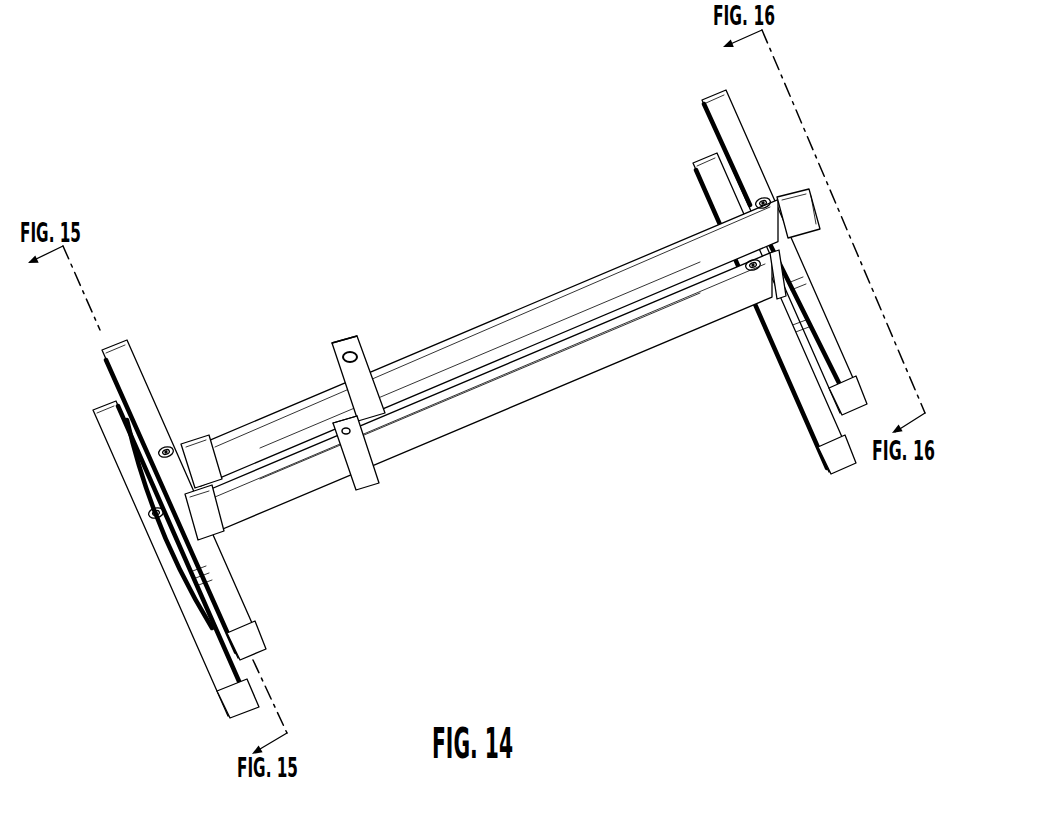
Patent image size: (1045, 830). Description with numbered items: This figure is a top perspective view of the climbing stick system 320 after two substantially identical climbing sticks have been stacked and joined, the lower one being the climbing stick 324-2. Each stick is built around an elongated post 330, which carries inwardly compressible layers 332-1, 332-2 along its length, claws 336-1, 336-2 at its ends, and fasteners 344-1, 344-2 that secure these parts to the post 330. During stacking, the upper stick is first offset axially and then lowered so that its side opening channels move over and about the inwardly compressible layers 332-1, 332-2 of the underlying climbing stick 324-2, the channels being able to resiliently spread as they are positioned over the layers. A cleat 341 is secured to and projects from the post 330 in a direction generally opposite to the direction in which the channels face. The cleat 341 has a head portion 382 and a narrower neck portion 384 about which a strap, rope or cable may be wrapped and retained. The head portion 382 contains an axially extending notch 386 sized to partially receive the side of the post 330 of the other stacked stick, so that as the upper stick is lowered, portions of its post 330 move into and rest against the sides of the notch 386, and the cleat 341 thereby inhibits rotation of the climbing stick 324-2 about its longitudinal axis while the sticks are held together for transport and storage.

The climbing stick system 320 is at (88, 203).
The climbing stick 324-2 is at (90, 420).
The post 330 is at (548, 304).
The inwardly compressible layer 332-1 is at (200, 450).
The inwardly compressible layer 332-2 is at (790, 195).
The claw 336-1 is at (247, 625).
The claw 336-2 is at (833, 440).
The cleat 341 is at (382, 396).
The fastener 344-1 is at (168, 448).
The fastener 344-2 is at (750, 260).
The head portion 382 is at (330, 347).
The neck portion 384 is at (360, 363).
The notch 386 is at (360, 340).